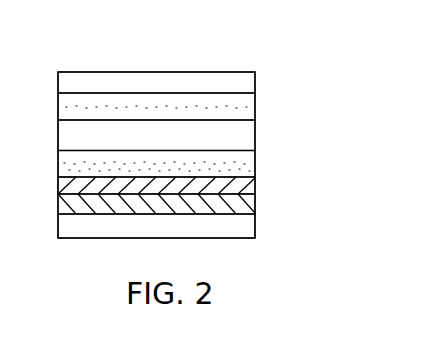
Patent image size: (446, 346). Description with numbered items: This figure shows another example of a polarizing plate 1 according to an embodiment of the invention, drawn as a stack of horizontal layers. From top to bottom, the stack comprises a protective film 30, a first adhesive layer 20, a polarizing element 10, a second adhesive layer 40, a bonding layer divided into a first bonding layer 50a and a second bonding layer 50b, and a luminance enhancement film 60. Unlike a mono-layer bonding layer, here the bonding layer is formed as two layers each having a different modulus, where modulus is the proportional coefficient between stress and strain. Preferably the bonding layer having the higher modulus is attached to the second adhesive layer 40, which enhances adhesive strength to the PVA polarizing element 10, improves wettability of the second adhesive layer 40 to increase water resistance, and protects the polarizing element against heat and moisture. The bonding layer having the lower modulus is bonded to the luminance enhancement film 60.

The polarizing plate 1 is at (164, 42).
The protective film 30 is at (249, 81).
The first adhesive layer 20 is at (249, 108).
The polarizing element 10 is at (249, 138).
The second adhesive layer 40 is at (249, 164).
The first bonding layer 50a is at (249, 188).
The second bonding layer 50b is at (249, 208).
The luminance enhancement film 60 is at (249, 234).